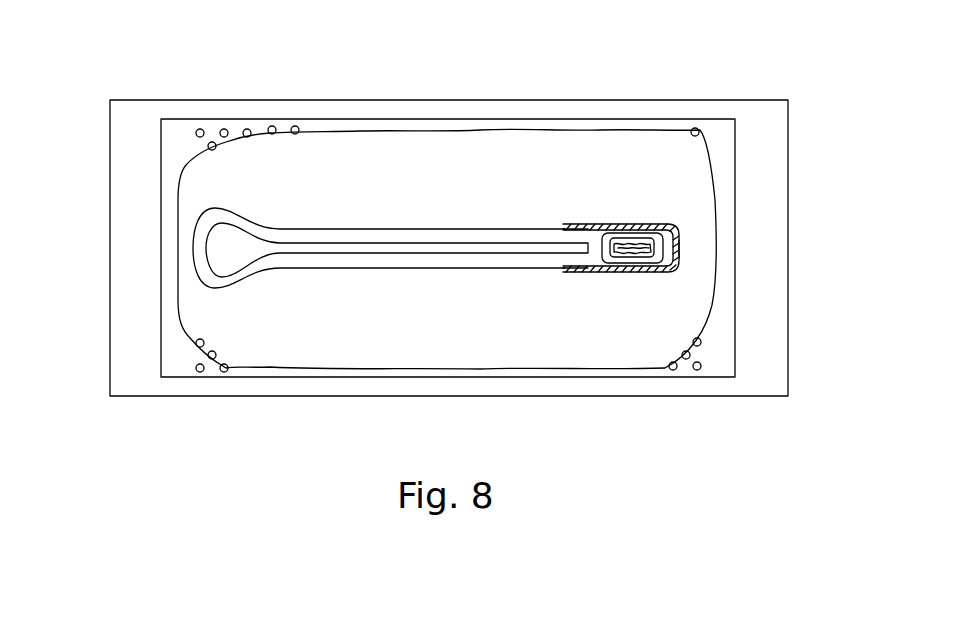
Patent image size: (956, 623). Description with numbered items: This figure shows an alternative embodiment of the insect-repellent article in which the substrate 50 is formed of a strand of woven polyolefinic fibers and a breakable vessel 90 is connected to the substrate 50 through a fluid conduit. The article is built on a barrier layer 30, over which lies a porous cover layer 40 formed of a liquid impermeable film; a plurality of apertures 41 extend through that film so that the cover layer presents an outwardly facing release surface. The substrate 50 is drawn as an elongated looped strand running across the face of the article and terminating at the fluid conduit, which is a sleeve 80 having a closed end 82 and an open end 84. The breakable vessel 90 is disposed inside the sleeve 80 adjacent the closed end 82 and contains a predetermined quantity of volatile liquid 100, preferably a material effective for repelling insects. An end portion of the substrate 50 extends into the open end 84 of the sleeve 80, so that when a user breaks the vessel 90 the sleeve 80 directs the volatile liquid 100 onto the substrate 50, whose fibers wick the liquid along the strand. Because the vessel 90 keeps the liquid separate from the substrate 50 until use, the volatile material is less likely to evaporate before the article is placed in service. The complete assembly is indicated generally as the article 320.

The barrier layer 30 is at (135, 152).
The porous cover layer 40 is at (241, 130).
The apertures 41 is at (221, 129).
The substrate 50 is at (322, 222).
The sleeve 80 is at (660, 224).
The closed end 82 is at (680, 243).
The open end 84 is at (565, 272).
The breakable vessel 90 is at (622, 263).
The volatile liquid 100 is at (614, 250).
The assembly 320 is at (346, 407).